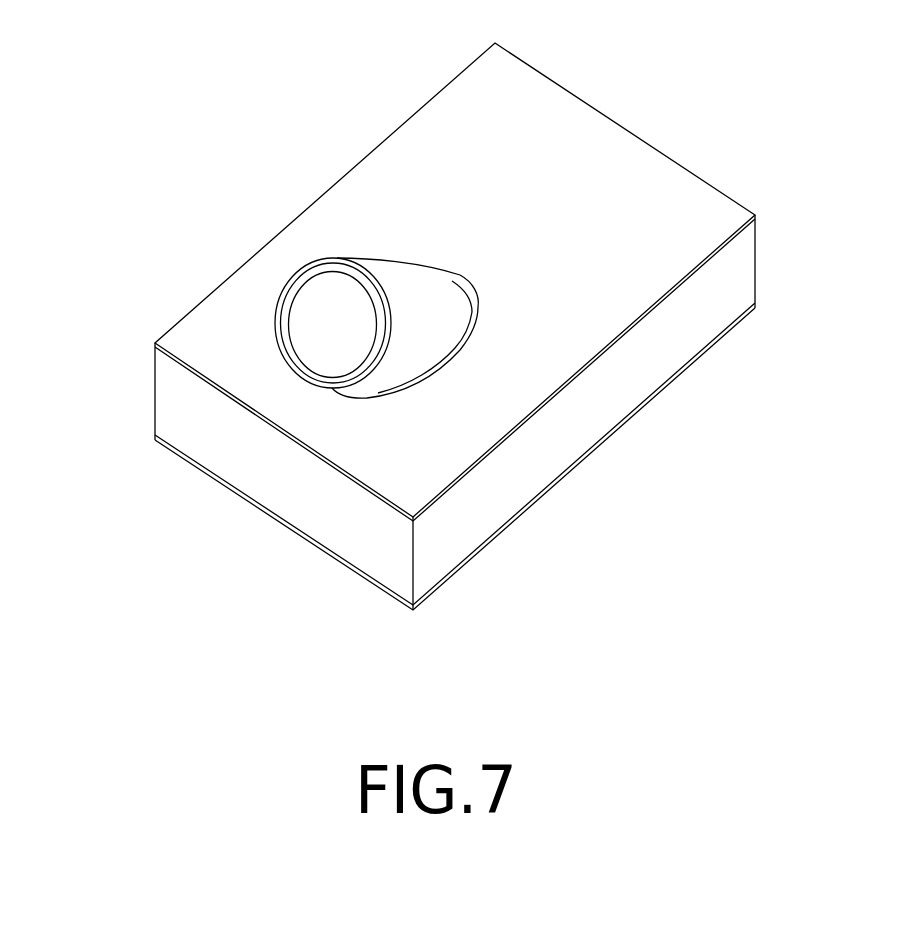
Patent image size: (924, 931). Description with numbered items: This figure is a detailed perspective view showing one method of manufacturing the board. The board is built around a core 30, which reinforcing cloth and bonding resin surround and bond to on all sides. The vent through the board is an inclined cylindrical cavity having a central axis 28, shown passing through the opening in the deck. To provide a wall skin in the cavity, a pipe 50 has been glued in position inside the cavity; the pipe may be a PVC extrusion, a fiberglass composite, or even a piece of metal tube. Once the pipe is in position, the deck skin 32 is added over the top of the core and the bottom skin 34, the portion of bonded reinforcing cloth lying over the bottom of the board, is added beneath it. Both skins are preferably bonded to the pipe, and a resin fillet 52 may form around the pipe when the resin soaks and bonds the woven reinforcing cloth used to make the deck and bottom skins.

The central axis 28 is at (343, 325).
The core 30 is at (713, 295).
The deck skin 32 is at (148, 336).
The bottom skin 34 is at (173, 450).
The pipe 50 is at (392, 283).
The resin fillet 52 is at (460, 273).